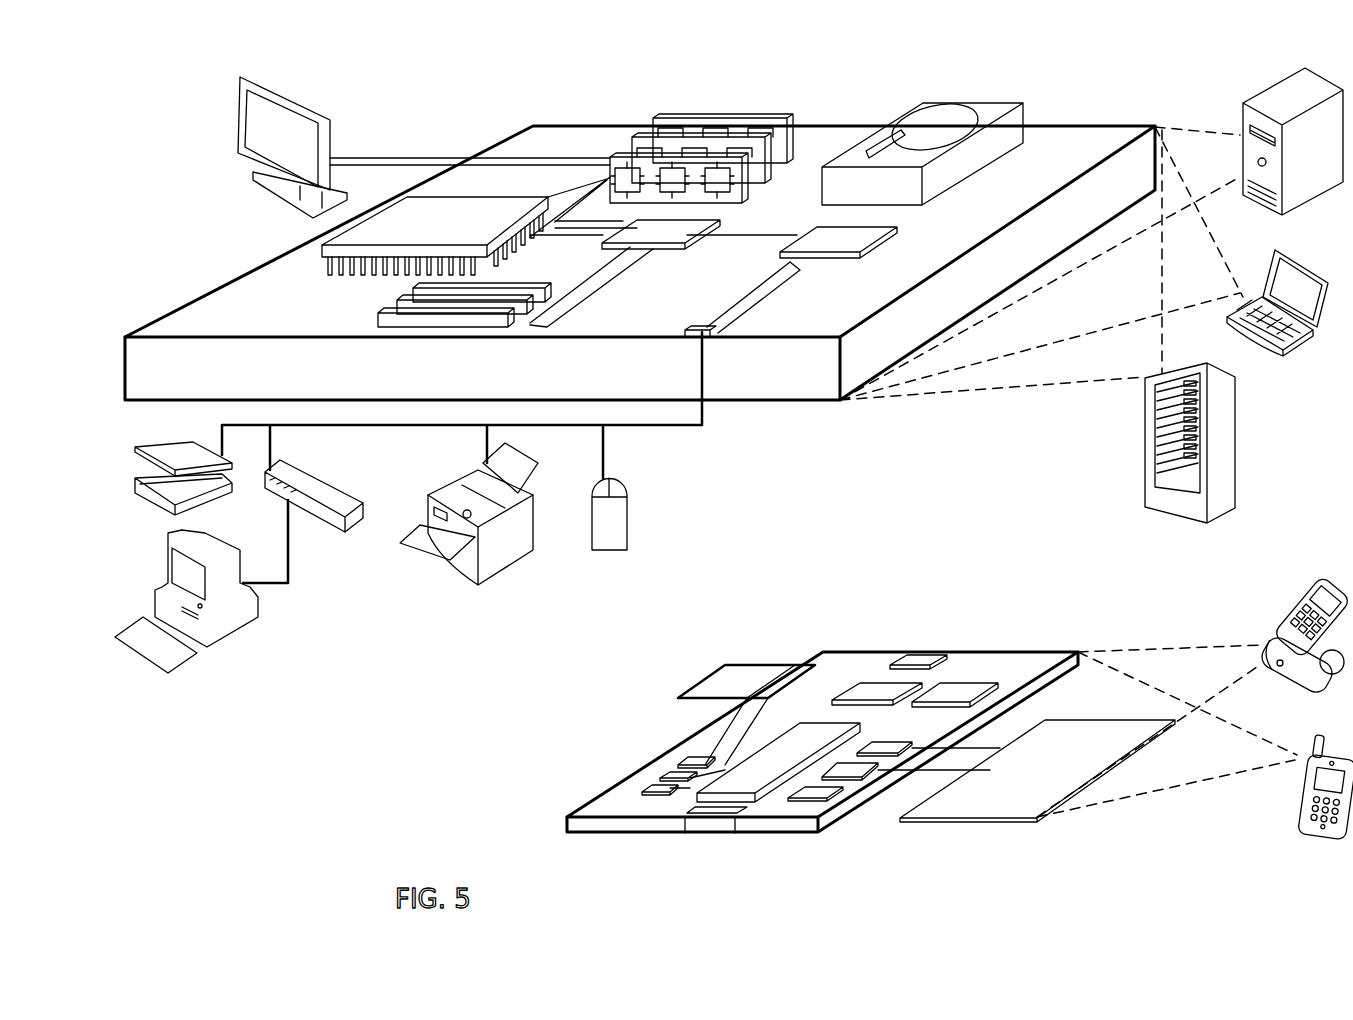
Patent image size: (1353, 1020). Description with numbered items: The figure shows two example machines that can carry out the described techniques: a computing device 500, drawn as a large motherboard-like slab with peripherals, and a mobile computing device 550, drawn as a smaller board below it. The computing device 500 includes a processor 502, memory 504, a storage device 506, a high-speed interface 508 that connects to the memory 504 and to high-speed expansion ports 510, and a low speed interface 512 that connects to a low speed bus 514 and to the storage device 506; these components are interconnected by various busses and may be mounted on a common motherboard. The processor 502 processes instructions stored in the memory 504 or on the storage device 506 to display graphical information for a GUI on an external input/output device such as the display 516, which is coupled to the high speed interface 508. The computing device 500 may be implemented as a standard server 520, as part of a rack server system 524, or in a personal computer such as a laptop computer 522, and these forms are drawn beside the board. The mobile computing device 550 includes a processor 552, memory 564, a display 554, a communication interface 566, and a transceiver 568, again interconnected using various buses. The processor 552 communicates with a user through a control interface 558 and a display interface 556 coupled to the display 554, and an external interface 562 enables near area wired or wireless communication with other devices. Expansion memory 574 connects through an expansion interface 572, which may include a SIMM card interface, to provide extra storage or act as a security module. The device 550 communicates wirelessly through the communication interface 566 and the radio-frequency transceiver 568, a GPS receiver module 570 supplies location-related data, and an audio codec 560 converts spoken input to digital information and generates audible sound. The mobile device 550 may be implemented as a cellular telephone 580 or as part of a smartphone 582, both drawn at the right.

The computing device 500 is at (459, 99).
The processor 502 is at (290, 250).
The memory 504 is at (673, 113).
The storage device 506 is at (913, 103).
The high-speed interface 508 is at (640, 233).
The high-speed expansion ports 510 is at (403, 297).
The low speed interface 512 is at (837, 237).
The low speed bus 514 is at (705, 338).
The display 516 is at (238, 80).
The standard server 520 is at (1237, 110).
The laptop computer 522 is at (1270, 255).
The rack server system 524 is at (1145, 468).
The mobile computing device 550 is at (803, 629).
The processor 552 is at (755, 802).
The display 554 is at (1035, 823).
The display interface 556 is at (823, 800).
The control interface 558 is at (860, 780).
The audio codec 560 is at (883, 750).
The external interface 562 is at (715, 820).
The memory 564 is at (660, 778).
The communication interface 566 is at (877, 690).
The transceiver 568 is at (955, 690).
The GPS receiver module 570 is at (917, 647).
The expansion interface 572 is at (795, 663).
The expansion memory 574 is at (722, 665).
The cellular telephone 580 is at (1318, 590).
The smartphone 582 is at (1303, 733).